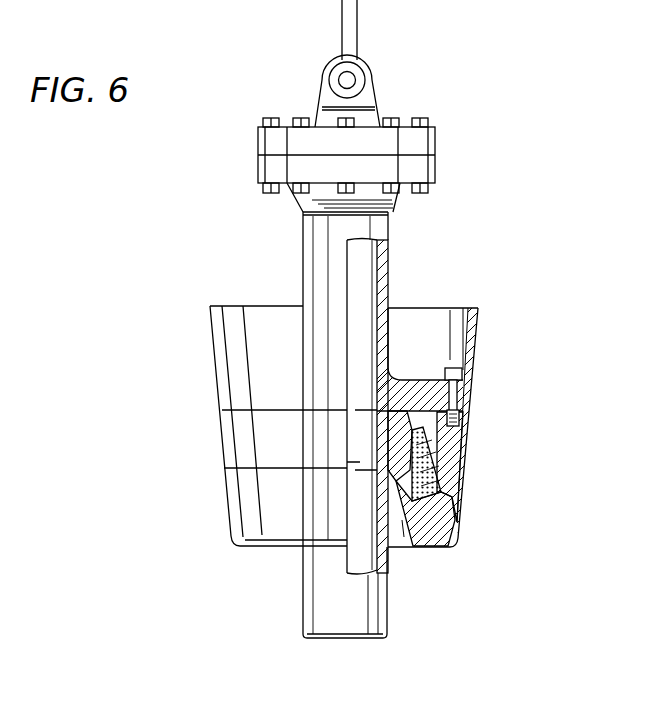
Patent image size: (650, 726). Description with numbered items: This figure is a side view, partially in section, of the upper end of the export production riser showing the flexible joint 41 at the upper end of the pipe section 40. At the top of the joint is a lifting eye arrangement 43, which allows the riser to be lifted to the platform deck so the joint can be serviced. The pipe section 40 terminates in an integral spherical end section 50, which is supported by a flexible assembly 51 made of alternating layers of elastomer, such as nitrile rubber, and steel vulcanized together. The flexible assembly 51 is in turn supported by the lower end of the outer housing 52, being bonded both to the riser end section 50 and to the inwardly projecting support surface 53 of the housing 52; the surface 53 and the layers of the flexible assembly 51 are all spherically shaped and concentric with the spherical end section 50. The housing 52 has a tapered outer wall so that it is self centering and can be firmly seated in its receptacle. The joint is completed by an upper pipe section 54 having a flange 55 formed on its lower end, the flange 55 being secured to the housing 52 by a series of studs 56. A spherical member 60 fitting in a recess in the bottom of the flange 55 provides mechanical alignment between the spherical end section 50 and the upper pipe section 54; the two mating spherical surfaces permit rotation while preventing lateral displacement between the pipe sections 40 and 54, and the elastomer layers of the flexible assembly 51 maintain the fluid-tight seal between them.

The pipe section 40 is at (303, 606).
The flexible joint 41 is at (484, 338).
The lifting eye arrangement 43 is at (375, 108).
The spherical end section 50 is at (383, 462).
The flexible assembly 51 is at (428, 472).
The outer housing 52 is at (460, 452).
The inwardly projecting surface 53 is at (450, 546).
The upper pipe section 54 is at (388, 225).
The flange 55 is at (418, 378).
The studs 56 is at (463, 370).
The spherical member 60 is at (380, 430).